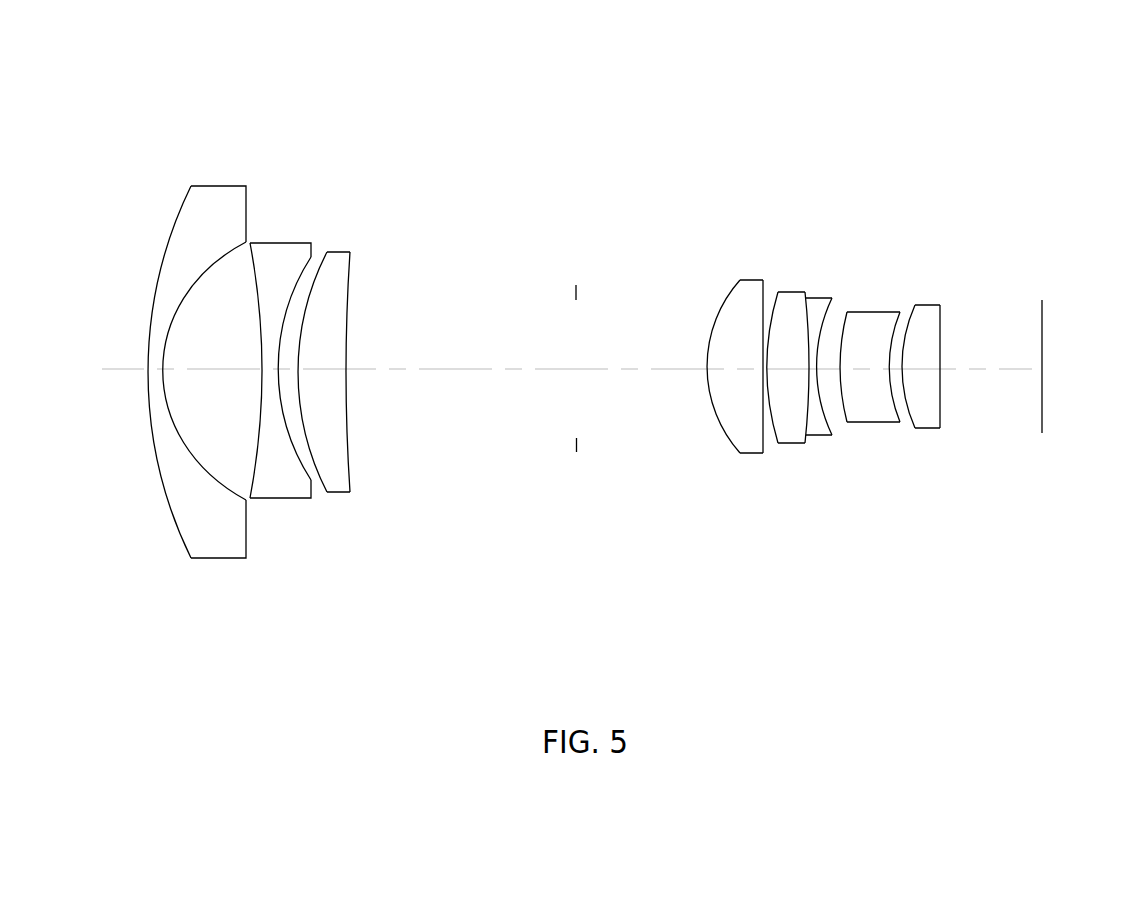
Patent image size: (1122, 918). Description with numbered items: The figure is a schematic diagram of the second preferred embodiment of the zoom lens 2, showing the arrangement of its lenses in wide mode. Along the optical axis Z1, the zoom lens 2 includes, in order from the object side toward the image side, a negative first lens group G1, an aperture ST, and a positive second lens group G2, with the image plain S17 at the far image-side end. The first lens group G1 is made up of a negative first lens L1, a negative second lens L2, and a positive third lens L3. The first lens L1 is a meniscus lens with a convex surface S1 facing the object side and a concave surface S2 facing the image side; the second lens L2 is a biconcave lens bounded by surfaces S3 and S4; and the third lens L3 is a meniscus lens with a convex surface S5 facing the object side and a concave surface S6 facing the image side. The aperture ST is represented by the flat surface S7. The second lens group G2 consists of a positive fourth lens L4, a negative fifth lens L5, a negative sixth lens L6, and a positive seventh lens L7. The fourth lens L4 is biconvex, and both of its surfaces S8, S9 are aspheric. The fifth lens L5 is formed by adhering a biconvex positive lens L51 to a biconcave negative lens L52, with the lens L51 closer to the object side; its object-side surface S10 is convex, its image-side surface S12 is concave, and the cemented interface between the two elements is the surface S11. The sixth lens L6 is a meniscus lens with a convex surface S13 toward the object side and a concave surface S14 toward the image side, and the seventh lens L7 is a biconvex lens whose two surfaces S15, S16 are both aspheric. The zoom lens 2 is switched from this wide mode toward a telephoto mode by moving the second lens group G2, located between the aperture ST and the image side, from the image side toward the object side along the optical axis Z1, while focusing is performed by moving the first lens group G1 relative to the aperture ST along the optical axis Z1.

The zoom lens 2 is at (586, 345).
The optical axis Z1 is at (135, 370).
The first lens group G1 is at (407, 88).
The second lens group G2 is at (995, 143).
The first lens L1 is at (194, 380).
The second lens L2 is at (293, 376).
The third lens L3 is at (351, 354).
The fourth lens L4 is at (733, 357).
The fifth lens L5 is at (902, 192).
The positive lens L51 is at (803, 394).
The negative lens L52 is at (851, 399).
The sixth lens L6 is at (891, 341).
The seventh lens L7 is at (953, 366).
The aperture ST is at (607, 385).
The convex surface S1 is at (184, 538).
The concave surface S2 is at (232, 493).
The surface S3 is at (255, 472).
The surface S4 is at (302, 477).
The convex surface S5 is at (322, 478).
The concave surface S6 is at (349, 432).
The surface S7 is at (578, 447).
The surface S8 is at (726, 438).
The surface S9 is at (765, 438).
The surface S10 is at (778, 418).
The surface S11 is at (805, 420).
The surface S12 is at (835, 437).
The convex surface S13 is at (848, 423).
The concave surface S14 is at (895, 421).
The surface S15 is at (917, 428).
The surface S16 is at (941, 413).
The image plain S17 is at (1041, 418).